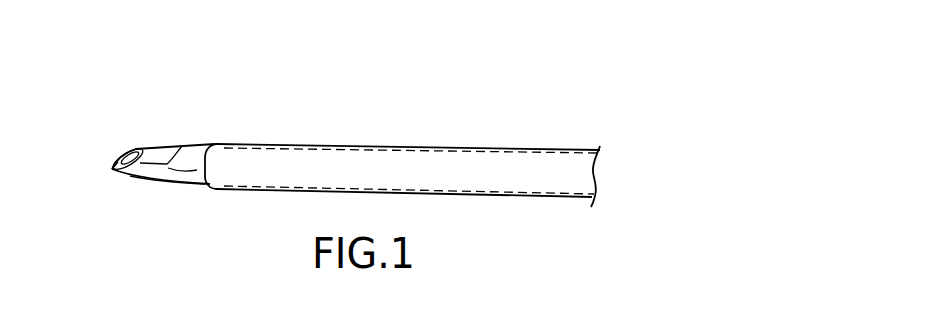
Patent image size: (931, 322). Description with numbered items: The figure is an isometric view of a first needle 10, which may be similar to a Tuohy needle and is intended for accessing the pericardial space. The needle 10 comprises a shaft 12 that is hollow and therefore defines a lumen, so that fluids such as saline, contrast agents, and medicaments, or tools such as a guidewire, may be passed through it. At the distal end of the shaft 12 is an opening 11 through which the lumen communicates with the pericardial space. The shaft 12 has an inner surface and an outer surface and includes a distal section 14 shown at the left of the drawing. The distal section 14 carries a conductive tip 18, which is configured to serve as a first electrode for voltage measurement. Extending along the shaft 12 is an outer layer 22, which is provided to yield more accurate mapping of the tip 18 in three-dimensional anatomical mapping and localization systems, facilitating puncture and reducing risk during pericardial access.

The first needle 10 is at (488, 88).
The opening 11 is at (132, 153).
The shaft 12 is at (195, 147).
The distal section 14 is at (170, 179).
The conductive tip 18 is at (112, 168).
The outer layer 22 is at (296, 145).